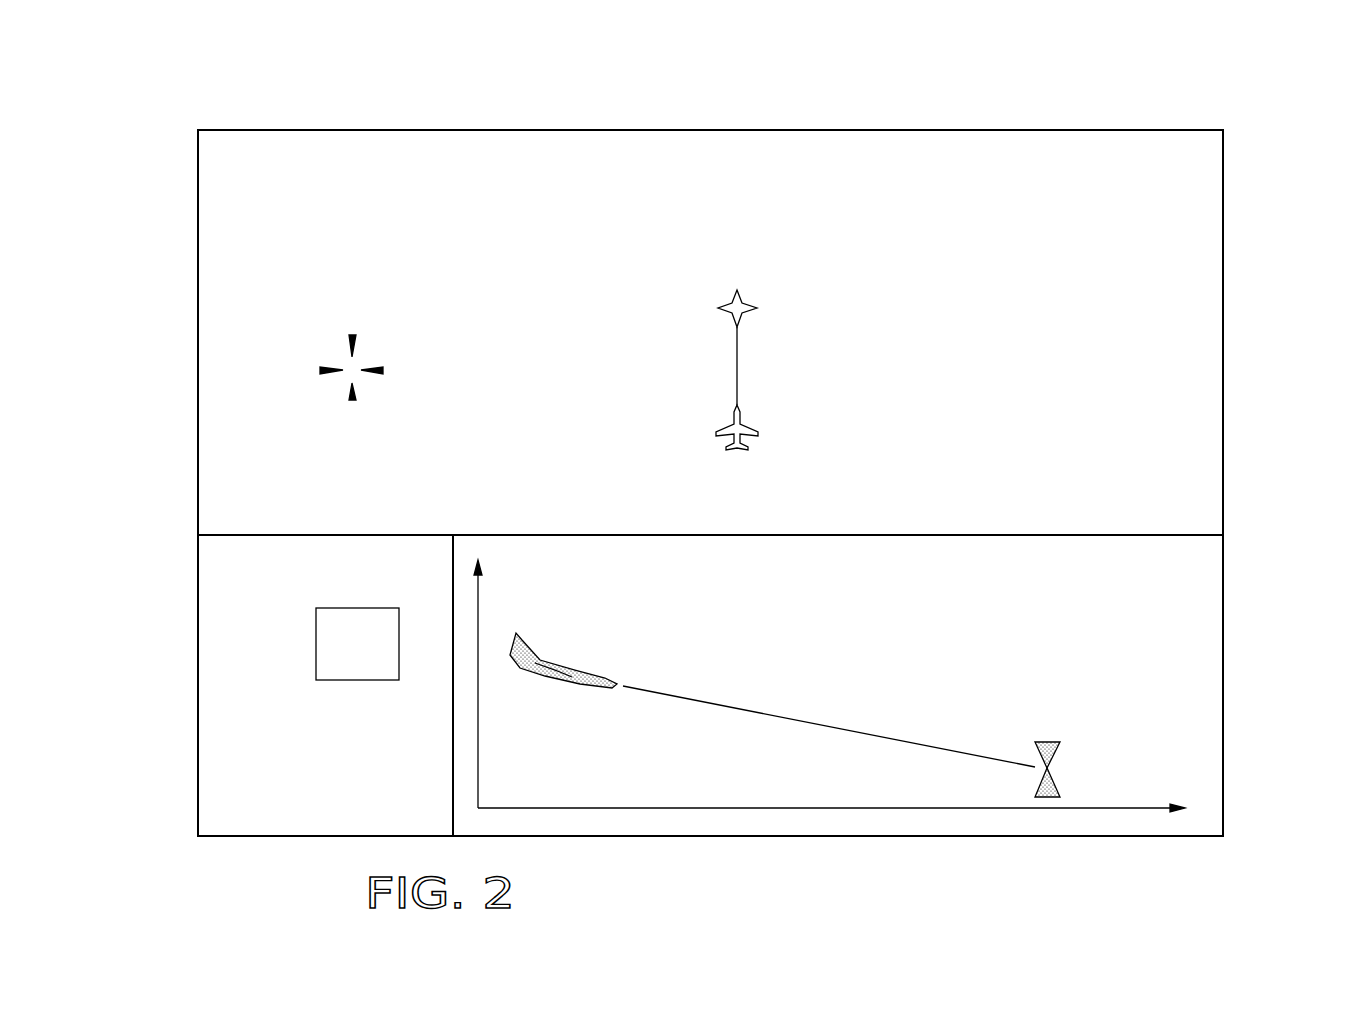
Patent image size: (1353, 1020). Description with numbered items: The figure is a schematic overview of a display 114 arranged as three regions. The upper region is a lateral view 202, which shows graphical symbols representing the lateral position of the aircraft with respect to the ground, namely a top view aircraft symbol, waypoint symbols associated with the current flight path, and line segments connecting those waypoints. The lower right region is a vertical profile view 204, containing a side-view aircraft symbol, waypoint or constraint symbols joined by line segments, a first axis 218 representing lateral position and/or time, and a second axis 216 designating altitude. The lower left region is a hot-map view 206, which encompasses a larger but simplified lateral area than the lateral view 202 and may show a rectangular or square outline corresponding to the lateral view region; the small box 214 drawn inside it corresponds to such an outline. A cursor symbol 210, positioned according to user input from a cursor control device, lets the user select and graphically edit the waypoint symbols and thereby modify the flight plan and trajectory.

The display 114 is at (947, 104).
The lateral view 202 is at (1207, 323).
The vertical profile view 204 is at (1207, 618).
The hot-map view 206 is at (216, 640).
The cursor symbol 210 is at (336, 389).
The box indicator 214 is at (360, 680).
The second axis 216 is at (481, 610).
The first axis 218 is at (1090, 808).